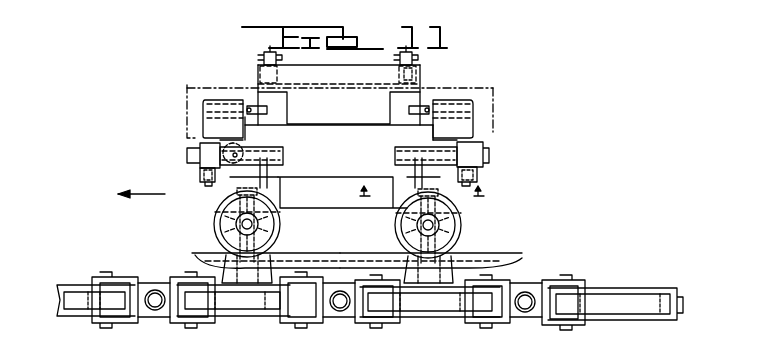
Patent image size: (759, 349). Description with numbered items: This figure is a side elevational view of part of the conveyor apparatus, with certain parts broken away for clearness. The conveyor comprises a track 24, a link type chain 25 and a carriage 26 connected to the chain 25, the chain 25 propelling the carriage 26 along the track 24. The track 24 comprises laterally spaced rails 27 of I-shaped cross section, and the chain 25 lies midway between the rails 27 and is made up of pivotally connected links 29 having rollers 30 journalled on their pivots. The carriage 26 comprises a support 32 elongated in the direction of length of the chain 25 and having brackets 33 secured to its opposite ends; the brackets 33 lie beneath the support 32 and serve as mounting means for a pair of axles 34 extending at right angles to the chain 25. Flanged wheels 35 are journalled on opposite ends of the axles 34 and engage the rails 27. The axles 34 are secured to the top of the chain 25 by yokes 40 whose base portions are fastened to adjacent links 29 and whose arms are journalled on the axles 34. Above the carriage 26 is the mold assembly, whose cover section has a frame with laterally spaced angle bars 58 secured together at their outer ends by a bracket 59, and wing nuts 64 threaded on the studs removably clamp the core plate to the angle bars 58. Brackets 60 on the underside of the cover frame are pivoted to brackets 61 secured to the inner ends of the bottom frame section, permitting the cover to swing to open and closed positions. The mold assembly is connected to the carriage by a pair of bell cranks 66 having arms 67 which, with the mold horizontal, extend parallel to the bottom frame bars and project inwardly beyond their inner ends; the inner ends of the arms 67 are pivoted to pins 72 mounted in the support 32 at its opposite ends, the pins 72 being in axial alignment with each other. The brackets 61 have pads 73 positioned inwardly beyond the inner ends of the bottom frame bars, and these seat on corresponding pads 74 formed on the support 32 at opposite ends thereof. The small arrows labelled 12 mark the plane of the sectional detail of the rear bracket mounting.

The dimension/clearance 12 is at (430, 188).
The track 24 is at (483, 259).
The link type chain 25 is at (552, 280).
The carriage 26 is at (472, 225).
The rails 27 is at (205, 255).
The links 29 is at (86, 282).
The rollers 30 is at (103, 301).
The support 32 is at (352, 197).
The brackets 33 is at (280, 232).
The axles 34 is at (259, 223).
The flanged wheels 35 is at (218, 222).
The yokes 40 is at (251, 288).
The angle bars 58 is at (283, 83).
The bracket 59 is at (424, 75).
The brackets 60 is at (258, 88).
The brackets 61 is at (207, 112).
The wing nuts 64 is at (263, 55).
The bell cranks 66 is at (199, 175).
The arms 67 is at (210, 182).
The pins 72 is at (190, 152).
The pads 73 is at (240, 140).
The pads 74 is at (253, 147).